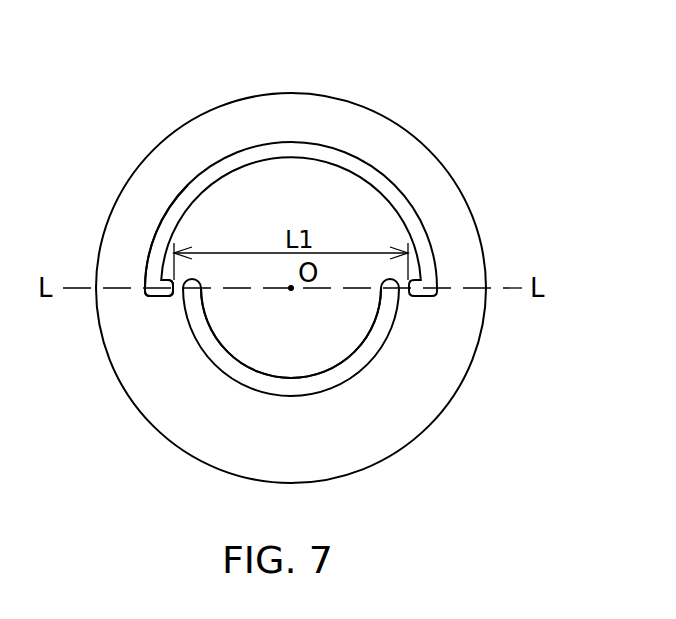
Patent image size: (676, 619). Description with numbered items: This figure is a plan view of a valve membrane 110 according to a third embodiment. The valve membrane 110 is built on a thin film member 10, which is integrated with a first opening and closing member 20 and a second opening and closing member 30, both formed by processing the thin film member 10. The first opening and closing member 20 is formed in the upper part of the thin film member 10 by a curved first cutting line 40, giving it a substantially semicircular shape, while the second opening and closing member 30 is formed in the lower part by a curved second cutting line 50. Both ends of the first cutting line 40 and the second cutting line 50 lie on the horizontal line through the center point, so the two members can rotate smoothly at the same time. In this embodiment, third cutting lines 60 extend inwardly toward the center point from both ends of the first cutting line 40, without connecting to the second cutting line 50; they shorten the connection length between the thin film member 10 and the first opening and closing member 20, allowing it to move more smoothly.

The valve membrane 110 is at (461, 124).
The thin film member 10 is at (362, 114).
The first opening and closing member 20 is at (385, 215).
The first cutting line 40 is at (170, 225).
The third cutting lines 60 is at (160, 296).
The second cutting line 50 is at (223, 365).
The second opening and closing member 30 is at (325, 348).